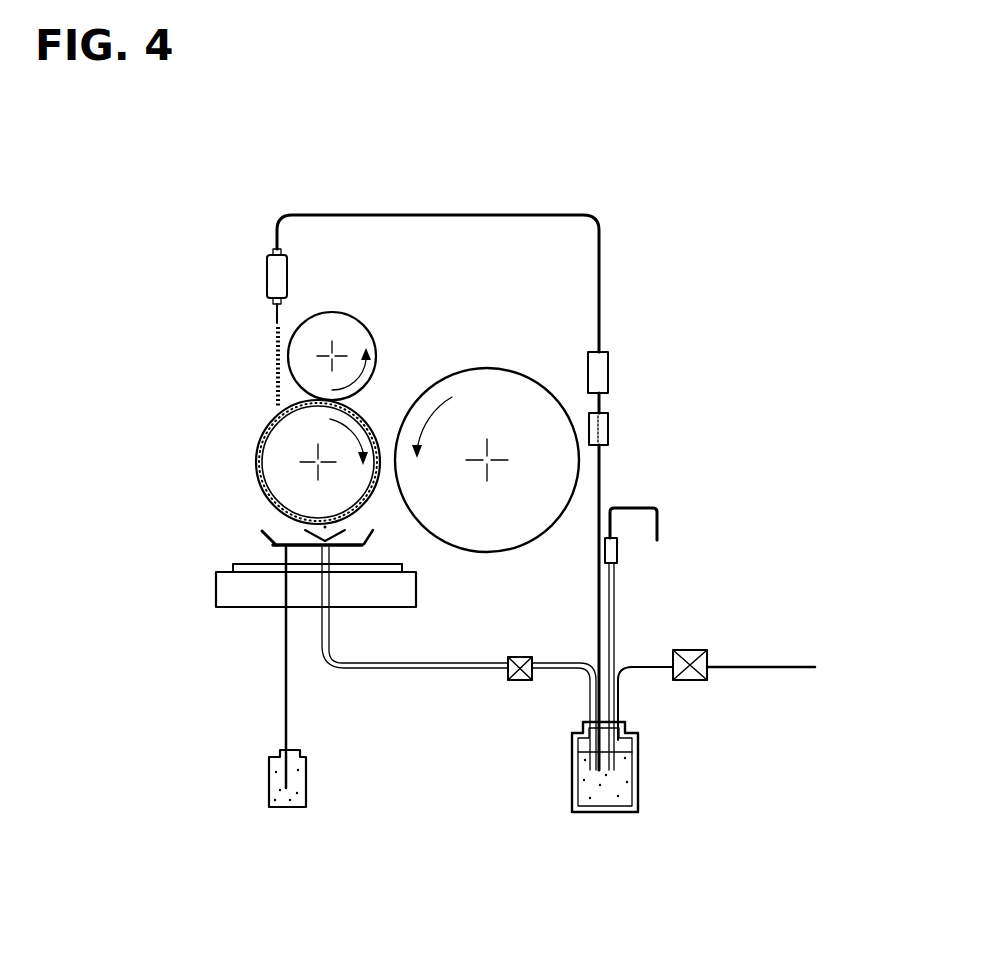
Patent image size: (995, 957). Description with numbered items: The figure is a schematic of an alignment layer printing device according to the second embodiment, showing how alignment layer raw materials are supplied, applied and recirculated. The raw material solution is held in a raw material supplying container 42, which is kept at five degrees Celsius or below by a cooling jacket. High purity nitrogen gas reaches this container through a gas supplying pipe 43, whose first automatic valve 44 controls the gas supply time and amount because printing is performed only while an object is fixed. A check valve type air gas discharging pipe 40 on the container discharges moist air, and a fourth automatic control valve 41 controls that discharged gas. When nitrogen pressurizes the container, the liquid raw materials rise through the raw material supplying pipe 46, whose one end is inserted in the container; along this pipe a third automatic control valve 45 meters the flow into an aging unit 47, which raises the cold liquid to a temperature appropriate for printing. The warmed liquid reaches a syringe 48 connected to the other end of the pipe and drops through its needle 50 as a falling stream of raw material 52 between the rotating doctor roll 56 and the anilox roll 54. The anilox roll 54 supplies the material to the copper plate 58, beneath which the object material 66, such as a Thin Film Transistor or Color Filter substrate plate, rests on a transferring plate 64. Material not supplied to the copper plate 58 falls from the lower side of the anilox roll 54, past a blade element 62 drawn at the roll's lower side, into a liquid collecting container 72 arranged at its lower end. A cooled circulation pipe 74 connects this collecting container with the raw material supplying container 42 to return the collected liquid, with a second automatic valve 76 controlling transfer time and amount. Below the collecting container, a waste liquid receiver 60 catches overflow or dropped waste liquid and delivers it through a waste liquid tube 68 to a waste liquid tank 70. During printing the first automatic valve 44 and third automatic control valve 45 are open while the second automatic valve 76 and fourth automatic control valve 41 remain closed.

The check valve type air gas discharging pipe 40 is at (637, 508).
The fourth automatic control valve 41 is at (618, 552).
The raw material supplying container 42 is at (624, 782).
The gas supplying pipe 43 is at (752, 665).
The first automatic valve 44 is at (683, 648).
The third automatic control valve 45 is at (609, 428).
The raw material supplying pipe 46 is at (599, 296).
The aging unit 47 is at (609, 370).
The syringe 48 is at (270, 278).
The needle 50 is at (277, 315).
The discharged solution 52 is at (276, 356).
The anilox roll 54 is at (292, 440).
The doctor roll 56 is at (350, 330).
The copper plate 58 is at (475, 382).
The waste liquid receiver 60 is at (268, 545).
The blade 62 is at (265, 533).
The transferring plate 64 is at (238, 598).
The object material 66 is at (258, 566).
The waste liquid tube 68 is at (284, 677).
The waste liquid tank 70 is at (276, 784).
The liquid collecting container 72 is at (347, 534).
The circulation pipe 74 is at (404, 675).
The second automatic valve 76 is at (520, 686).